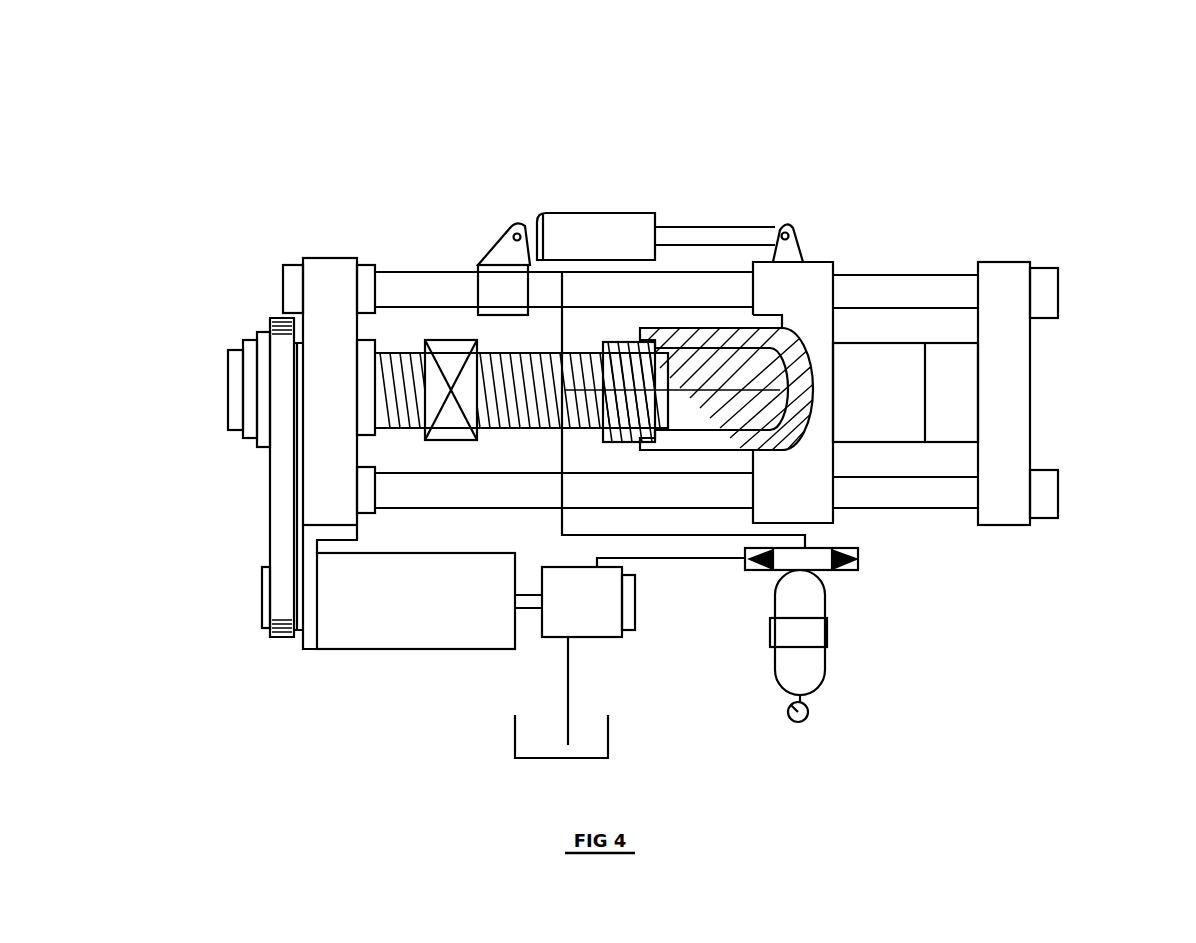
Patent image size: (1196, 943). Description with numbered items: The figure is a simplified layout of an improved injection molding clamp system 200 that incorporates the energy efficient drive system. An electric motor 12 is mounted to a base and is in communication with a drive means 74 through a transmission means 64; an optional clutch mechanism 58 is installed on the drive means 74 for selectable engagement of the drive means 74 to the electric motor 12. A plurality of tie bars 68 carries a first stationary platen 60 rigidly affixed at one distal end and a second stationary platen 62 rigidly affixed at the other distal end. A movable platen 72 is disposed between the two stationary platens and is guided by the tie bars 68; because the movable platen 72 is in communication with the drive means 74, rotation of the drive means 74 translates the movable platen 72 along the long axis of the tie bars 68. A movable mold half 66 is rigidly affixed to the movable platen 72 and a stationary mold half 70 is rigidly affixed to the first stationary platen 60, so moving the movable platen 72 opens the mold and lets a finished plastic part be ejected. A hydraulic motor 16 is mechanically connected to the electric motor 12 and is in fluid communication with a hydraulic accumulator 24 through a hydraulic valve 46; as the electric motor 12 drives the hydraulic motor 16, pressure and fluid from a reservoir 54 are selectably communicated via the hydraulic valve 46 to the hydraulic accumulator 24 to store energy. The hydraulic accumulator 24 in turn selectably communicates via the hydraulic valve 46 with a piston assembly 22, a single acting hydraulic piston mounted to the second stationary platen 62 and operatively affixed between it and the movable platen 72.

The injection molding clamp system 200 is at (1063, 108).
The drive means 74 is at (537, 358).
The clutch mechanism 58 is at (455, 338).
The second stationary platen 62 is at (345, 258).
The piston assembly 22 is at (578, 212).
The movable platen 72 is at (817, 262).
The tie bars 68 is at (878, 273).
The movable mold half 66 is at (902, 340).
The first stationary platen 60 is at (1027, 262).
The stationary mold half 70 is at (972, 400).
The transmission means 64 is at (267, 523).
The electric motor 12 is at (387, 650).
The hydraulic motor 16 is at (610, 638).
The reservoir 54 is at (532, 760).
The hydraulic valve 46 is at (858, 570).
The hydraulic accumulator 24 is at (820, 685).